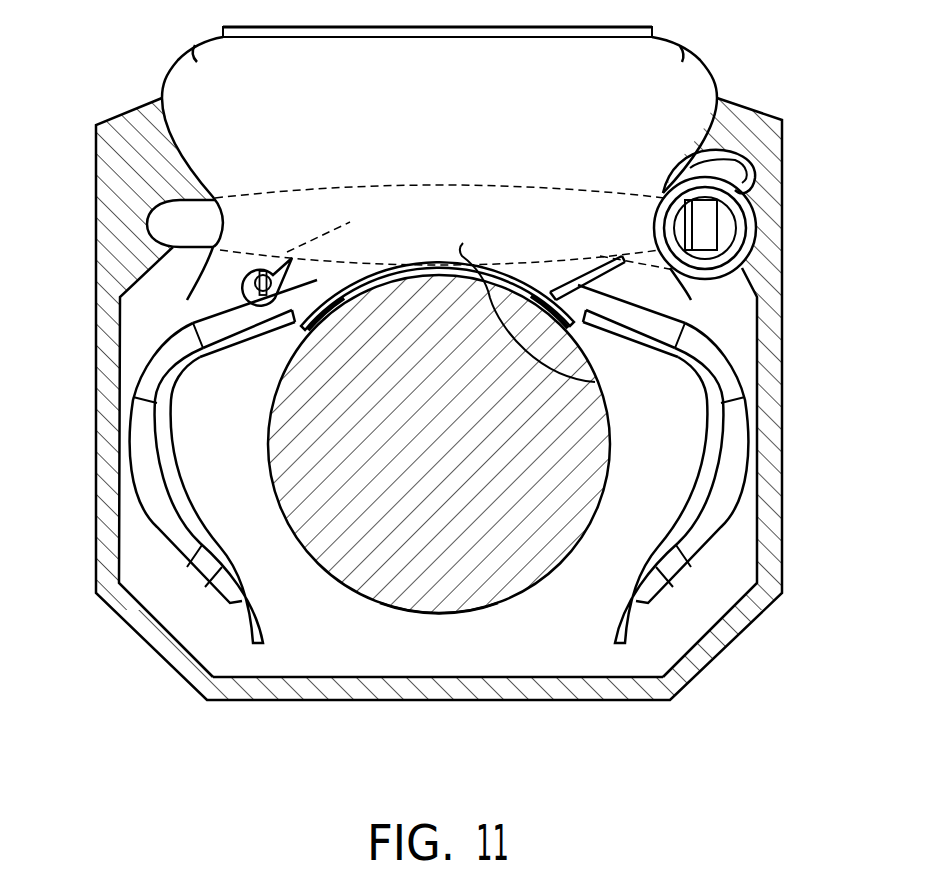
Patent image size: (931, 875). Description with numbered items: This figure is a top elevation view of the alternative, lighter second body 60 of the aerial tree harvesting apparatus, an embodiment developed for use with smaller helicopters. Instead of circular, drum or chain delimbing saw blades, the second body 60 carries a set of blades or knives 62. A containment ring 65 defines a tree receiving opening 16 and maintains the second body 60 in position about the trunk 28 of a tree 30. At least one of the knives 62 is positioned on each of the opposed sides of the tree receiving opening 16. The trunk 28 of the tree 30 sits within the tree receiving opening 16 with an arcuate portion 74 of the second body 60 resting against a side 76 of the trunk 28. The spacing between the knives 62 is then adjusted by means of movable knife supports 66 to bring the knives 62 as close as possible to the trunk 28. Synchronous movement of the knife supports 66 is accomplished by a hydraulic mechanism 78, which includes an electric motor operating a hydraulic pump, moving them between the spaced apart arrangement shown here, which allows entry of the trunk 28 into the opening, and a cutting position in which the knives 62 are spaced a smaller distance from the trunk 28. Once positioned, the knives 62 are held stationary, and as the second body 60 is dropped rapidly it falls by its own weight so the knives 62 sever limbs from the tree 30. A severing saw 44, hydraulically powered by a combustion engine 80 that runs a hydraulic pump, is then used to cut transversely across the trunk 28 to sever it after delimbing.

The tree receiving opening 16 is at (358, 625).
The trunk 28 is at (490, 540).
The tree 30 is at (438, 626).
The severing saw 44 is at (493, 190).
The second body 60 is at (803, 254).
The knives 62 is at (183, 495).
The containment ring 65 is at (773, 537).
The movable knife supports 66 is at (147, 485).
The arcuate portion 74 is at (456, 265).
The side 76 is at (595, 382).
The hydraulic mechanism 78 is at (298, 272).
The combustion engine 80 is at (670, 110).